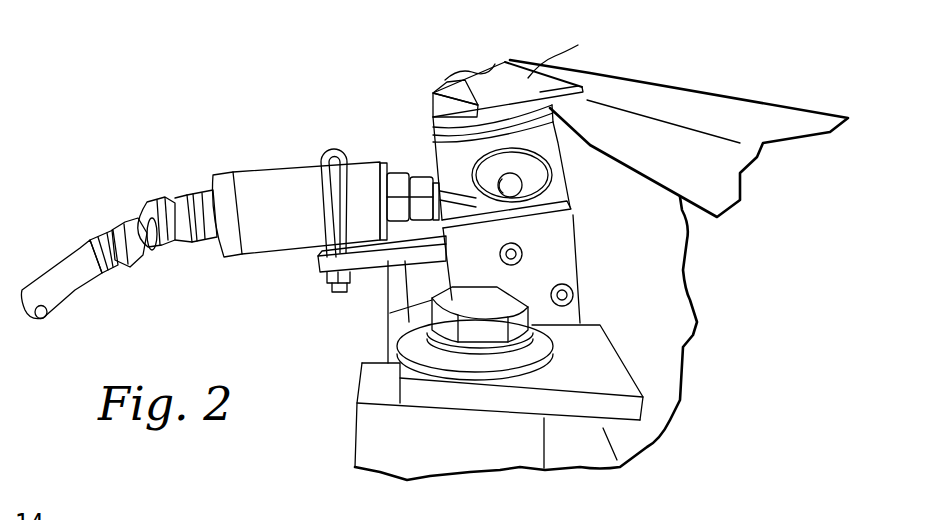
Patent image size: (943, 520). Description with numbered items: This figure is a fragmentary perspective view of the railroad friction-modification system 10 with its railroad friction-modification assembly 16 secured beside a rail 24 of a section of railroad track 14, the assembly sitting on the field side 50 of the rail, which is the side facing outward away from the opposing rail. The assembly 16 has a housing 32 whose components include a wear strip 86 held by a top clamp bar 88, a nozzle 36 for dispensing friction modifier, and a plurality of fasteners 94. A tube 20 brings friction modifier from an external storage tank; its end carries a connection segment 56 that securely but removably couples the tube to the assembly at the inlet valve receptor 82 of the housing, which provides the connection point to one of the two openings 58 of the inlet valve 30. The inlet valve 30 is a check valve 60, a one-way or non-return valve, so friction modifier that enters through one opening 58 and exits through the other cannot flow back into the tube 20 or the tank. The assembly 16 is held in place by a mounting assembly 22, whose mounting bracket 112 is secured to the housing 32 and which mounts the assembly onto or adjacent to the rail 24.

The railroad friction-modification system 10 is at (216, 17).
The section of railroad track 14 is at (731, 55).
The railroad friction-modification assembly 16 is at (334, 67).
The tube 20 is at (48, 272).
The mounting assembly 22 is at (297, 428).
The rail 24 is at (732, 115).
The inlet valve 30 is at (285, 187).
The housing 32 is at (445, 158).
The nozzle 36 is at (585, 94).
The field side 50 is at (478, 38).
The connection segment 56 is at (173, 208).
The openings 58 is at (187, 160).
The check valve 60 is at (283, 291).
The inlet valve receptor 82 is at (430, 157).
The wear strip 86 is at (560, 66).
The top clamp bar 88 is at (440, 82).
The fasteners 94 is at (523, 249).
The mounting bracket 112 is at (618, 378).